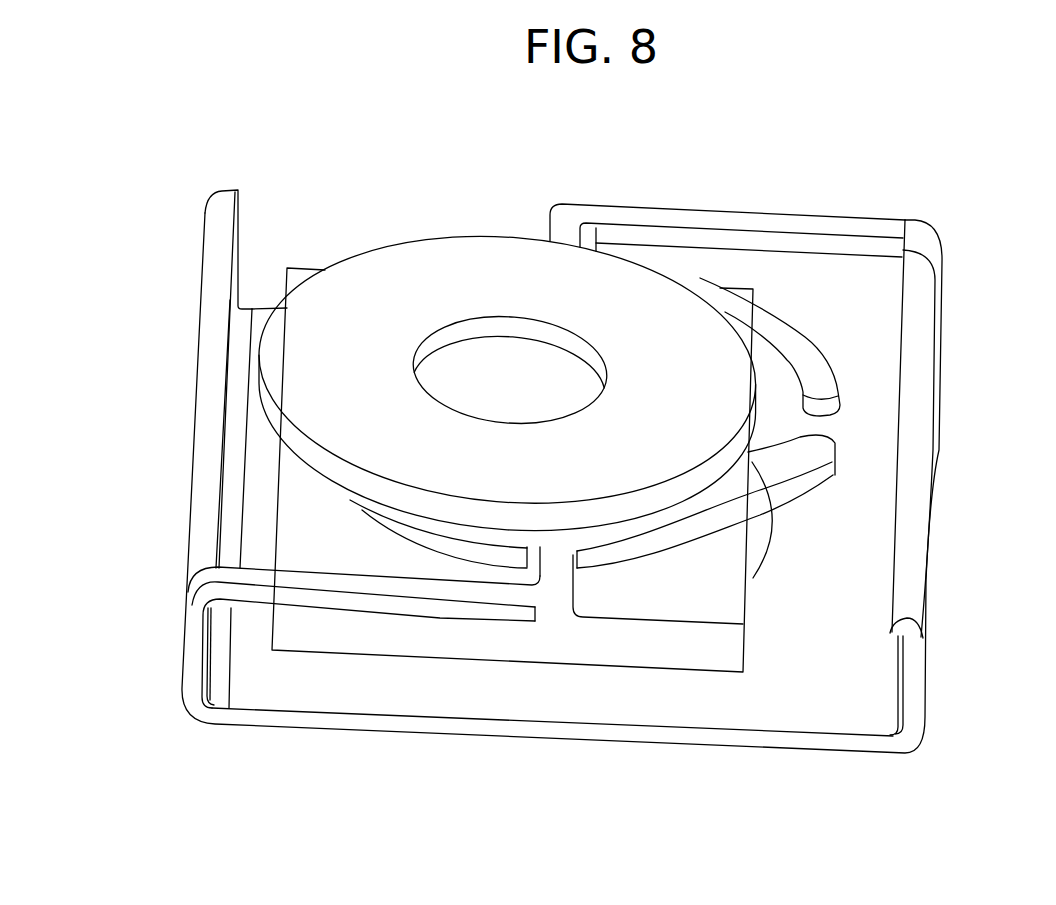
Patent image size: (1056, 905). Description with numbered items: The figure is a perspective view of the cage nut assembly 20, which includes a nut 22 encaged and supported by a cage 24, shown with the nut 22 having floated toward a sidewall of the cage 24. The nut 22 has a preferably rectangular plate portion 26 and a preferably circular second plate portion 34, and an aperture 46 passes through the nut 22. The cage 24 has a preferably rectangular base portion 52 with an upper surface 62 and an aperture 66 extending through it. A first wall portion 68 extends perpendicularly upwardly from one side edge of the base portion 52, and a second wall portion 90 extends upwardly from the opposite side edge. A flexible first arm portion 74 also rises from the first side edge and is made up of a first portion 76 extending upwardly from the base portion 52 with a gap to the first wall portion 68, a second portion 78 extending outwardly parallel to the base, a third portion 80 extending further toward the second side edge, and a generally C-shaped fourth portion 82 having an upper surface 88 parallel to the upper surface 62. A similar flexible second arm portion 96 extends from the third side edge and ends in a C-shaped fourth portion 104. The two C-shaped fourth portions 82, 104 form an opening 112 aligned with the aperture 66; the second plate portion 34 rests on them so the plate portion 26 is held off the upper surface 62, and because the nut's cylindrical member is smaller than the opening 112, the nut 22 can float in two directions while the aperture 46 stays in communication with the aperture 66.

The cage nut assembly 20 is at (907, 160).
The nut 22 is at (428, 269).
The cage 24 is at (929, 496).
The plate portion 26 is at (562, 648).
The second plate portion 34 is at (467, 248).
The aperture 46 is at (503, 372).
The base portion 52 is at (323, 718).
The upper surface 62 is at (264, 682).
The aperture 66 is at (757, 550).
The first wall portion 68 is at (207, 380).
The first arm portion 74 is at (427, 602).
The first portion 76 is at (197, 667).
The second portion 78 is at (372, 605).
The third portion 80 is at (558, 567).
The fourth portion 82 is at (697, 547).
The upper surface 88 is at (800, 468).
The second wall portion 90 is at (917, 387).
The second arm portion 96 is at (749, 213).
The fourth portion 104 is at (800, 352).
The opening 112 is at (767, 427).